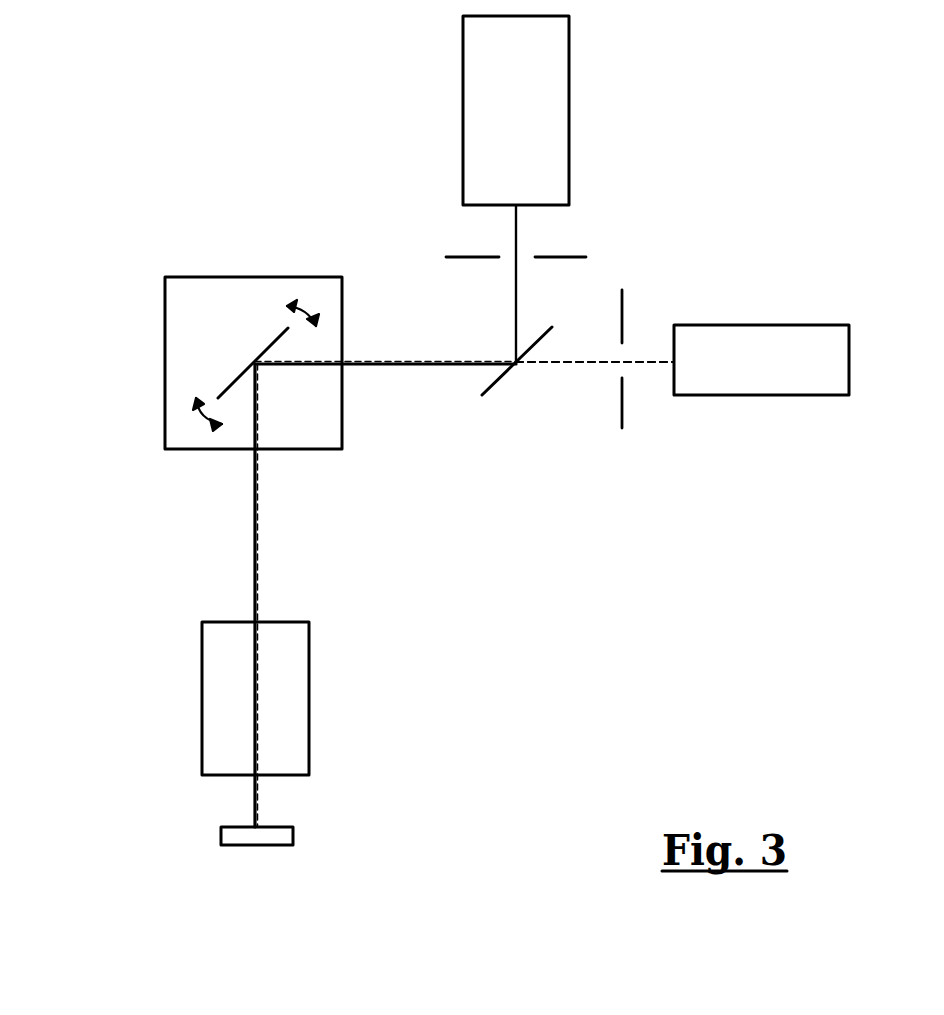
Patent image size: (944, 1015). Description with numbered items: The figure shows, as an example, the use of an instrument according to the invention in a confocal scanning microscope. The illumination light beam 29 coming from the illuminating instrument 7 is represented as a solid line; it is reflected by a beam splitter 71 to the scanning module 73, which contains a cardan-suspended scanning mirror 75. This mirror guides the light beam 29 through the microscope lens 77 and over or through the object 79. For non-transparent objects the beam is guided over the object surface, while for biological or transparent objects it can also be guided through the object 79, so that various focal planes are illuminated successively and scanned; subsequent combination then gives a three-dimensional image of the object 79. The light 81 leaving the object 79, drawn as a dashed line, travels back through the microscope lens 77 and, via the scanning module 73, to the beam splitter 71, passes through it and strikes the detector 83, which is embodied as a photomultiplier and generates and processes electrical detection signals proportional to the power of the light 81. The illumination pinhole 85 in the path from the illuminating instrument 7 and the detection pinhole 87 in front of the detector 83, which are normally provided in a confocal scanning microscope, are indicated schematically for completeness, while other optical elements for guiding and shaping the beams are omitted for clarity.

The illuminating instrument 7 is at (550, 118).
The illumination light beam 29 is at (513, 290).
The beam splitter 71 is at (521, 384).
The scanning module 73 is at (183, 345).
The cardan-suspended scanning mirror 75 is at (268, 345).
The microscope lens 77 is at (220, 690).
The object 79 is at (237, 827).
The light leaving the object 81 is at (567, 363).
The detector 83 is at (780, 342).
The illumination pinhole 85 is at (568, 257).
The detection pinhole 87 is at (622, 412).